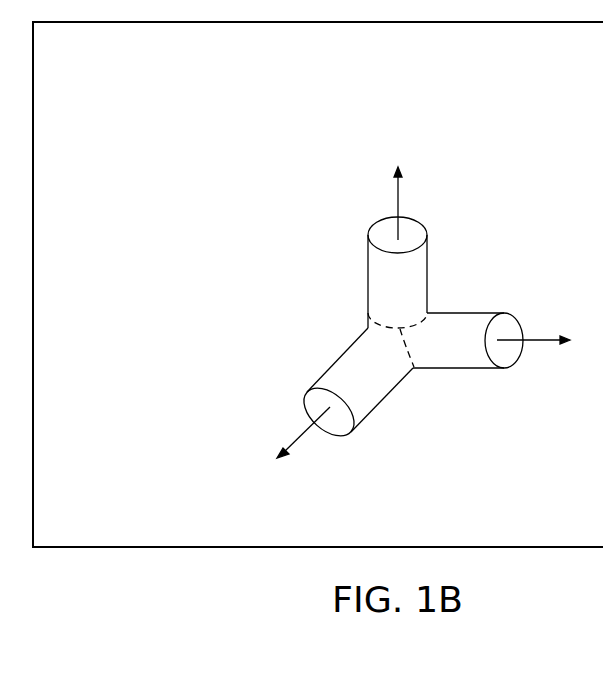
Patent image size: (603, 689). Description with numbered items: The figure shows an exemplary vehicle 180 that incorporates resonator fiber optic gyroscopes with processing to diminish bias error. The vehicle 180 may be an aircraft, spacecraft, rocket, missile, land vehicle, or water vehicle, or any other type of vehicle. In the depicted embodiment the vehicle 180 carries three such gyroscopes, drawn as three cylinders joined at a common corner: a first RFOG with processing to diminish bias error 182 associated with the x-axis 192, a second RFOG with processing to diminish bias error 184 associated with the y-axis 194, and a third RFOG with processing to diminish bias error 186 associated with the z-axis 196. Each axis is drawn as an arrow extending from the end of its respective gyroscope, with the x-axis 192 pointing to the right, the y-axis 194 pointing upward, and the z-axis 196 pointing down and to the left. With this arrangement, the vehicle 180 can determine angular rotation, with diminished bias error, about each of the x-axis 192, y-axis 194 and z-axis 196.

The vehicle 180 is at (205, 77).
The RFOG with processing to diminish bias error 182 is at (473, 312).
The RFOG with processing to diminish bias error 184 is at (368, 276).
The RFOG with processing to diminish bias error 186 is at (398, 387).
The x-axis 192 is at (545, 336).
The y-axis 194 is at (399, 193).
The z-axis 196 is at (307, 433).